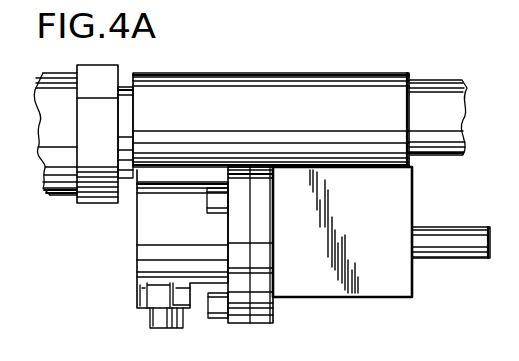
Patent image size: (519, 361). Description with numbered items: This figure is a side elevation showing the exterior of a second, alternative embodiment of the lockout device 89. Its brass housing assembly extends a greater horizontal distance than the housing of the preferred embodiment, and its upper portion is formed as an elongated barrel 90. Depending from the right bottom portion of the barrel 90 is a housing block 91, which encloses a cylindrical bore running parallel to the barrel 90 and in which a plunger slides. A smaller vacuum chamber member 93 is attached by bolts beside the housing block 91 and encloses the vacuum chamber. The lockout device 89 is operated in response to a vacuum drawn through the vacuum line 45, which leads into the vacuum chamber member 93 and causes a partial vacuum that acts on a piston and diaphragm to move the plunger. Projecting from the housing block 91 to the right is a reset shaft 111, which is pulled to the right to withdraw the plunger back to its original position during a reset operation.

The lockout device 89 is at (277, 61).
The barrel 90 is at (248, 120).
The housing block 91 is at (392, 246).
The vacuum chamber member 93 is at (189, 235).
The vacuum line 45 is at (147, 320).
The reset shaft 111 is at (462, 232).